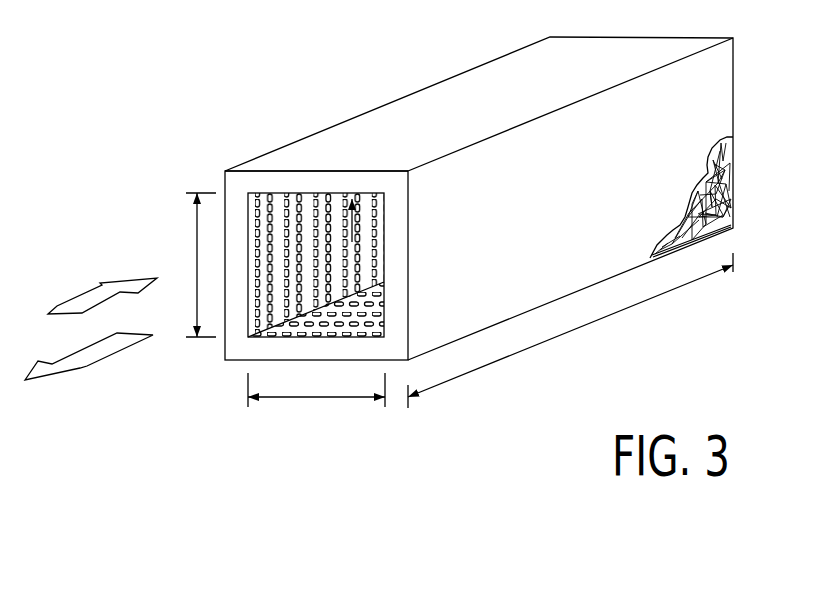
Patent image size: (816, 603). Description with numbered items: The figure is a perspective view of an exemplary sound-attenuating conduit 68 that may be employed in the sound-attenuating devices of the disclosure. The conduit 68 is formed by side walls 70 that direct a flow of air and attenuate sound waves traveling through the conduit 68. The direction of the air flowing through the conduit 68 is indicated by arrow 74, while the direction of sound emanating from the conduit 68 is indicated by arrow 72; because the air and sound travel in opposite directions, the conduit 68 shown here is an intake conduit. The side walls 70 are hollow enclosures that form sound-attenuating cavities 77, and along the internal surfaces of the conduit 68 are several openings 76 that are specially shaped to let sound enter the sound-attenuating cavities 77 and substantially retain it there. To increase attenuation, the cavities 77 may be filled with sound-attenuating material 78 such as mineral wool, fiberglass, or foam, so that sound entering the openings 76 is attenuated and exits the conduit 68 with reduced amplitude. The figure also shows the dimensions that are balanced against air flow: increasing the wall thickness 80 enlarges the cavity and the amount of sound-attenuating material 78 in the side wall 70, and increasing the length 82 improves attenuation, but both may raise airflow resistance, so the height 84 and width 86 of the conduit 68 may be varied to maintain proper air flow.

The sound-attenuating conduit 68 is at (306, 56).
The side walls 70 is at (262, 182).
The arrow indicating direction of sound 72 is at (110, 350).
The arrow indicating direction of air flow 74 is at (82, 300).
The openings 76 is at (366, 298).
The sound-attenuating cavities 77 is at (734, 228).
The sound-attenuating material 78 is at (722, 183).
The wall thickness 80 is at (353, 166).
The length 82 is at (568, 332).
The height 84 is at (196, 262).
The width 86 is at (313, 402).